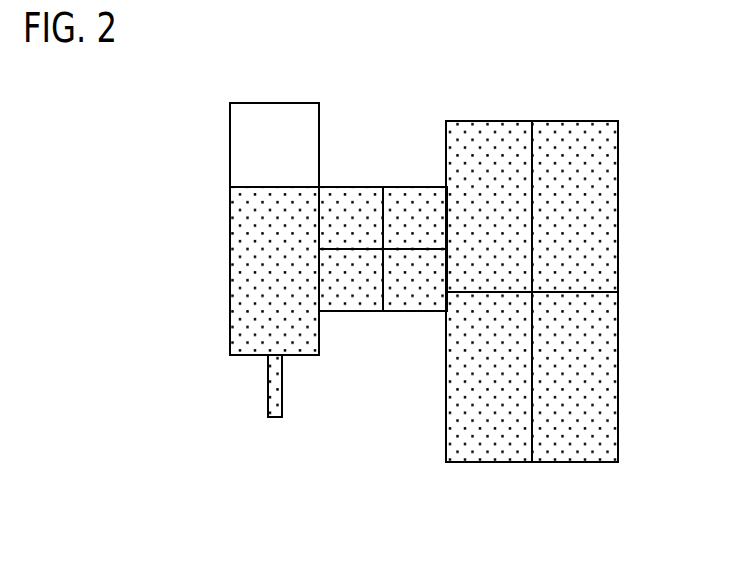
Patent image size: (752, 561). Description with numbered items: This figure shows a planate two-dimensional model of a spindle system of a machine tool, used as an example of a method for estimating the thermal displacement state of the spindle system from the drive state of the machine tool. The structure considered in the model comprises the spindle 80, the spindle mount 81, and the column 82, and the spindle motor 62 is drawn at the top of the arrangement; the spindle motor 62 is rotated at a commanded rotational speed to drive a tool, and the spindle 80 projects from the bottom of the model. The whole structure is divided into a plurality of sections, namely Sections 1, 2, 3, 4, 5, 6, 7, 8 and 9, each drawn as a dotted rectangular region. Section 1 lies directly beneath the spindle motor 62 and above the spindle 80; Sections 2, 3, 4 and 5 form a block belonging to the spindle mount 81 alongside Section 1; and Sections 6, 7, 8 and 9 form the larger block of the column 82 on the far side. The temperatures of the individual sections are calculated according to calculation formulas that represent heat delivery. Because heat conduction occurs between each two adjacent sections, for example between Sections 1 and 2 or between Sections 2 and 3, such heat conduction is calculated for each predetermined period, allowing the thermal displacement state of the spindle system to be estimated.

The section 1 is at (274, 271).
The section 2 is at (351, 218).
The section 3 is at (351, 280).
The section 4 is at (415, 218).
The section 5 is at (415, 280).
The section 6 is at (489, 206).
The section 7 is at (489, 377).
The section 8 is at (575, 206).
The section 9 is at (575, 377).
The spindle motor 62 is at (230, 133).
The spindle 80 is at (249, 357).
The spindle mount 81 is at (383, 218).
The column 82 is at (532, 262).